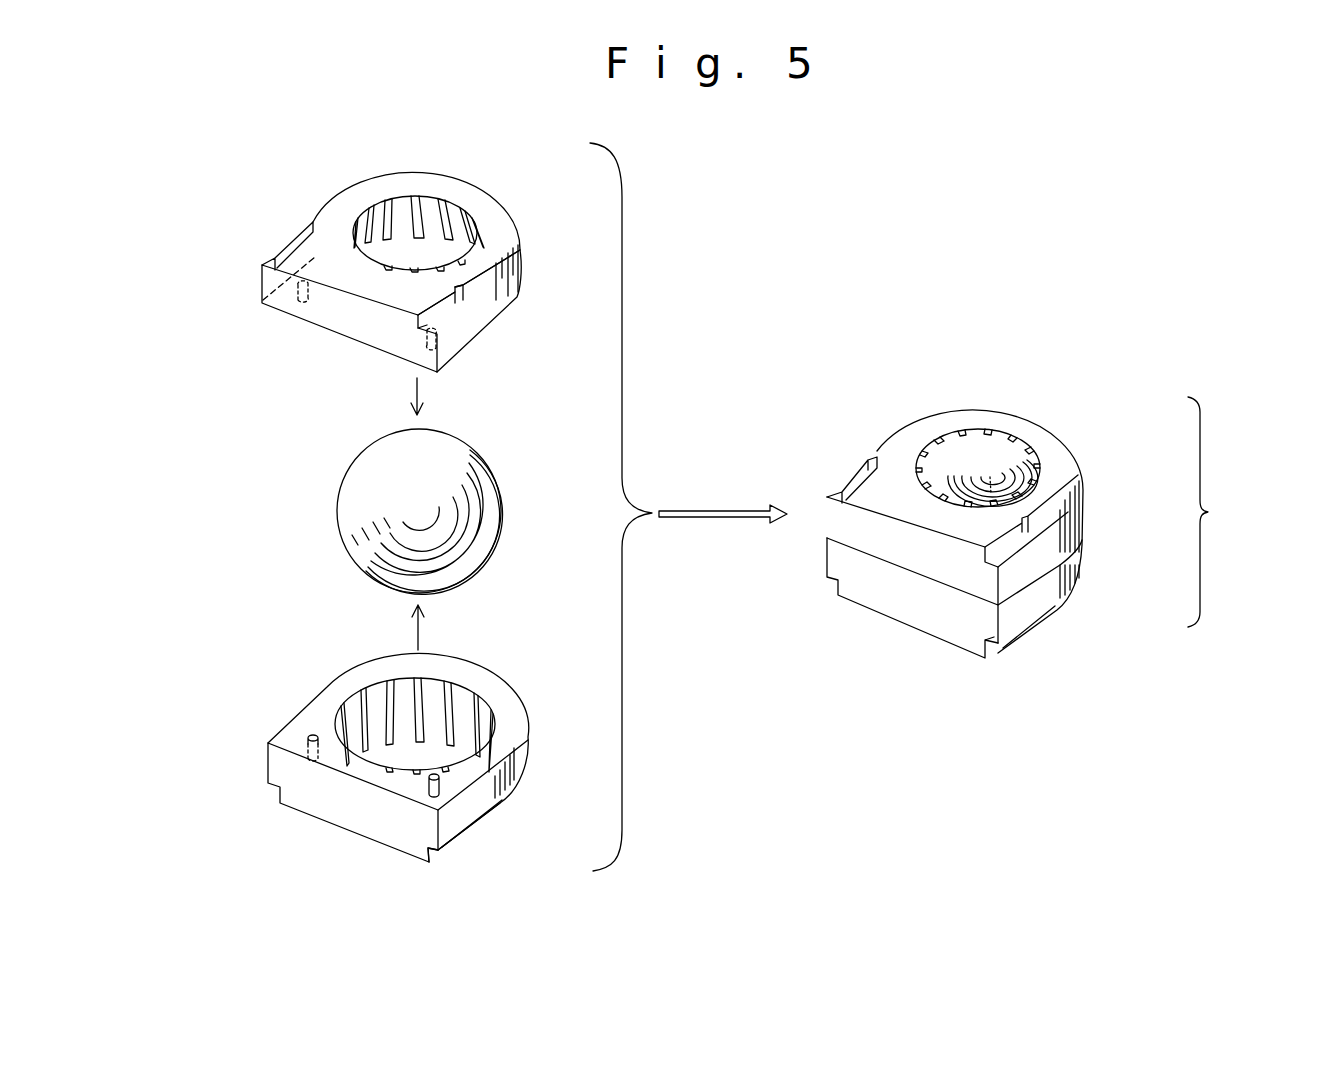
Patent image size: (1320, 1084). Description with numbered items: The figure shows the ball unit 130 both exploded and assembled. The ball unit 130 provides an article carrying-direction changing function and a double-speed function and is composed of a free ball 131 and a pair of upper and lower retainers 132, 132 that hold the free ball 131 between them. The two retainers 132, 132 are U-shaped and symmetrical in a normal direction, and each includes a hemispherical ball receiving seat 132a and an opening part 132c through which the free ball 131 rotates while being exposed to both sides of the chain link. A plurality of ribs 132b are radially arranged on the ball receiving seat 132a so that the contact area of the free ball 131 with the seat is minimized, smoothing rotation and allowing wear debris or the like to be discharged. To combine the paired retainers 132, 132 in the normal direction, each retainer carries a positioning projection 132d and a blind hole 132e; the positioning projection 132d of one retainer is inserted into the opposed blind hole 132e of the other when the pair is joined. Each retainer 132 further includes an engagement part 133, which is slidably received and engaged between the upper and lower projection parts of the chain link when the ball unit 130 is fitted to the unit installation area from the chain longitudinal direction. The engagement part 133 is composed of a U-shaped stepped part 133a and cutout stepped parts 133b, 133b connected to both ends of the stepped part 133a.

The ball unit 130 is at (1262, 537).
The free ball 131 is at (347, 490).
The retainer 132 is at (332, 200).
The ball receiving seat 132a is at (427, 217).
The ribs 132b is at (462, 210).
The opening part 132c is at (430, 203).
The positioning projection 132d is at (296, 304).
The blind hole 132e is at (427, 342).
The engagement part 133 is at (803, 601).
The U-shaped stepped part 133a is at (482, 297).
The cutout stepped parts 133b is at (450, 315).